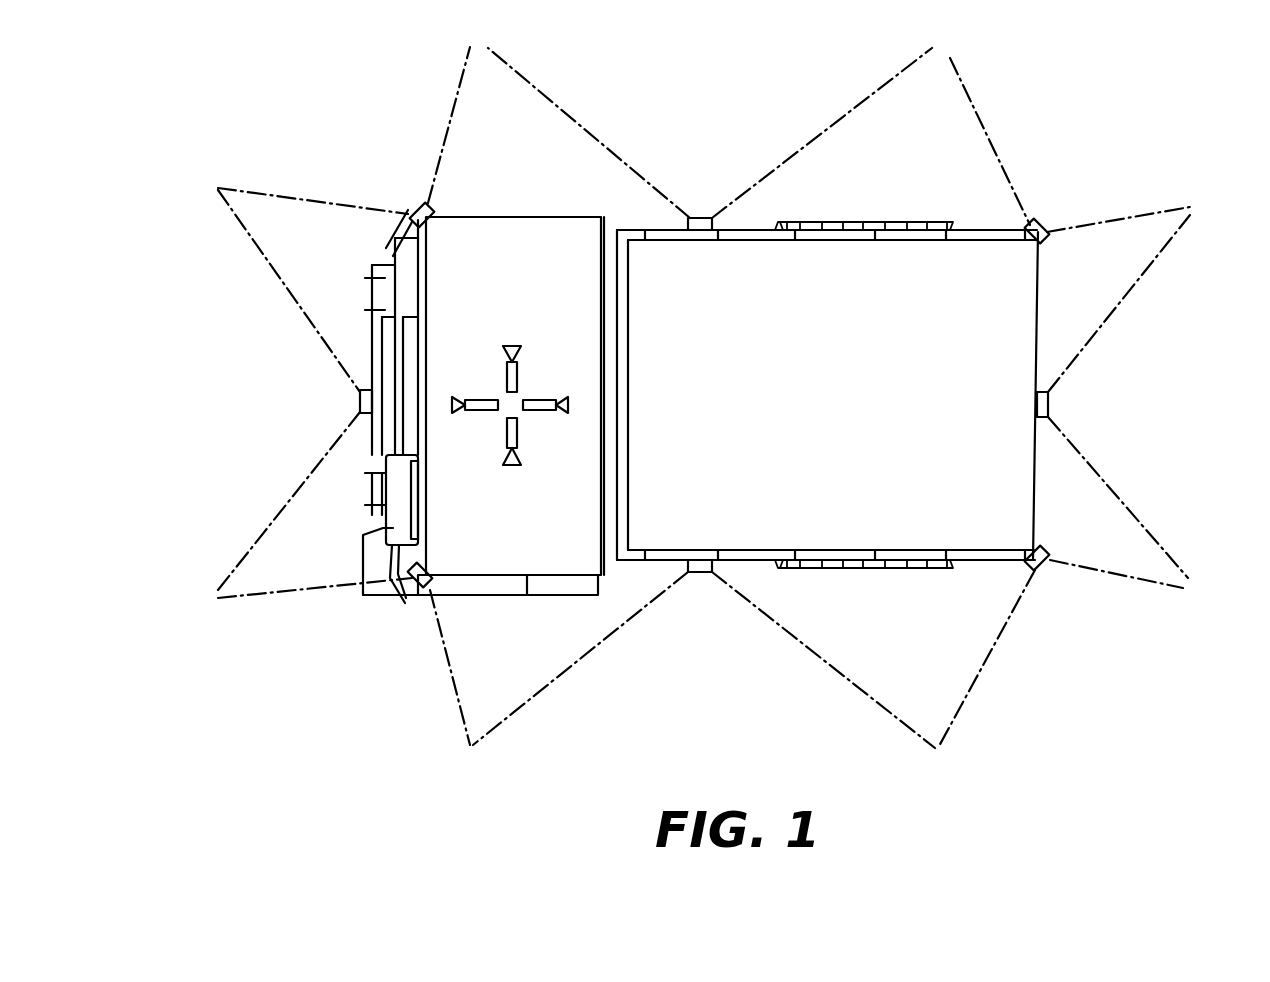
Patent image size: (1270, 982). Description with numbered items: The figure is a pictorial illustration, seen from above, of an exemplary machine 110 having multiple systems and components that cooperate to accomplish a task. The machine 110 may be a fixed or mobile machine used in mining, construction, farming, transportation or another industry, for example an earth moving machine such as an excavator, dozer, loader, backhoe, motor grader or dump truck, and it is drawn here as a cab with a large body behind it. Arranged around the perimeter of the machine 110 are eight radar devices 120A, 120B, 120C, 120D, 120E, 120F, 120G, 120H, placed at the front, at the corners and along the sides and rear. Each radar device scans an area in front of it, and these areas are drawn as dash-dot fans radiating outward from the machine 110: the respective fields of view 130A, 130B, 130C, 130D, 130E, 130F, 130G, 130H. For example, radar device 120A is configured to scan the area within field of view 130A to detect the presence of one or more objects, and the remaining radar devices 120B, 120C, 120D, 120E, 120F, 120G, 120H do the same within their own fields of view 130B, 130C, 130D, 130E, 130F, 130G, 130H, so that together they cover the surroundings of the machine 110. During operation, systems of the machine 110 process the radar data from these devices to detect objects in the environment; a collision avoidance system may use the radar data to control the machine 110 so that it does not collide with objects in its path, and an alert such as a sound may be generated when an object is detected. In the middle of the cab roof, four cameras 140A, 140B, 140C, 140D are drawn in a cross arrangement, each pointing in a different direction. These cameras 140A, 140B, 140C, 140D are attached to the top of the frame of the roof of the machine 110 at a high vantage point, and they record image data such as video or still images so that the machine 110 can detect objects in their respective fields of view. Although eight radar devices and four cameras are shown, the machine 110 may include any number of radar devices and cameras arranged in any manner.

The machine 110 is at (741, 404).
The radar device 120A is at (362, 388).
The radar device 120B is at (439, 211).
The radar device 120C is at (686, 224).
The radar device 120D is at (1028, 224).
The radar device 120E is at (1043, 388).
The radar device 120F is at (1047, 549).
The radar device 120G is at (716, 567).
The radar device 120H is at (434, 584).
The field of view 130A is at (273, 278).
The field of view 130B is at (440, 146).
The field of view 130C is at (581, 123).
The field of view 130D is at (988, 127).
The field of view 130E is at (1138, 281).
The field of view 130F is at (1145, 580).
The field of view 130G is at (829, 661).
The field of view 130H is at (456, 692).
The camera 140A is at (478, 413).
The camera 140B is at (506, 351).
The camera 140C is at (541, 400).
The camera 140D is at (519, 432).